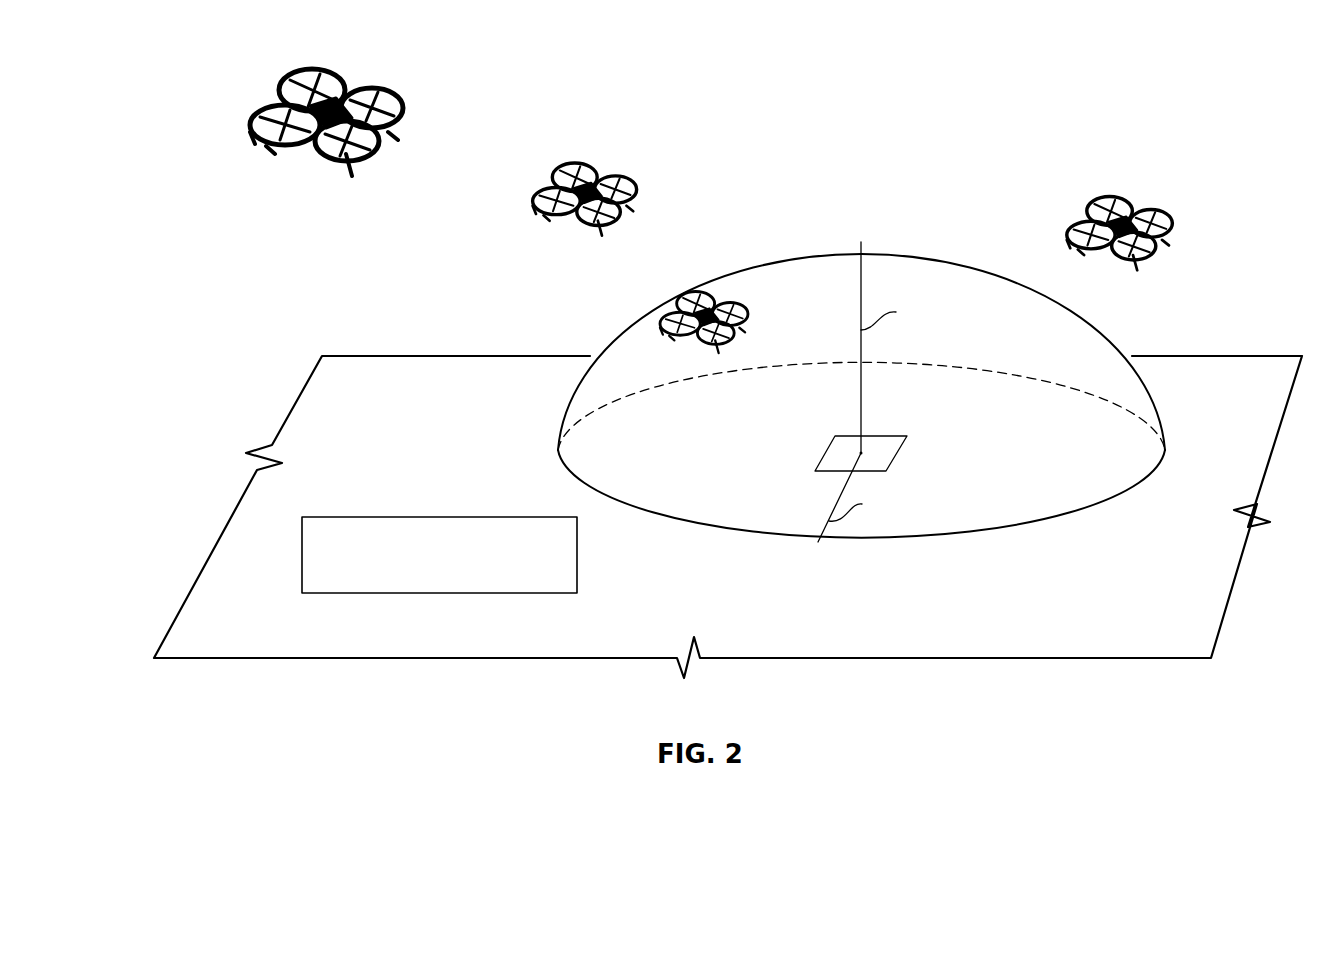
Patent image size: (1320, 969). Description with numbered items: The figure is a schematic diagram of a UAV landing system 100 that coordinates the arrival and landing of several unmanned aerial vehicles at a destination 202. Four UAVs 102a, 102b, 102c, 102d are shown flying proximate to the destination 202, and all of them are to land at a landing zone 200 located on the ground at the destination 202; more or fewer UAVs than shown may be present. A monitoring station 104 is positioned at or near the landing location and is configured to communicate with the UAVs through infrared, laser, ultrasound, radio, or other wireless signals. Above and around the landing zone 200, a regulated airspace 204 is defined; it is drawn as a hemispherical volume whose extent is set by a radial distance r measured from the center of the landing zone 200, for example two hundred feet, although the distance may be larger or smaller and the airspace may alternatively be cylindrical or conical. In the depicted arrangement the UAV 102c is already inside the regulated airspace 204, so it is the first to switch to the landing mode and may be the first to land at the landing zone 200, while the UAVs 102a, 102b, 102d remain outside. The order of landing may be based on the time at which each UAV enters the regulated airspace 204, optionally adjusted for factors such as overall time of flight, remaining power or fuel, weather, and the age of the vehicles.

The UAV landing system 100 is at (238, 345).
The UAV 102a is at (410, 105).
The UAV 102b is at (640, 187).
The UAV 102c is at (753, 312).
The UAV 102d is at (1177, 220).
The monitoring station 104 is at (577, 580).
The landing zone 200 is at (889, 438).
The destination 202 is at (1162, 338).
The regulated airspace 204 is at (918, 245).